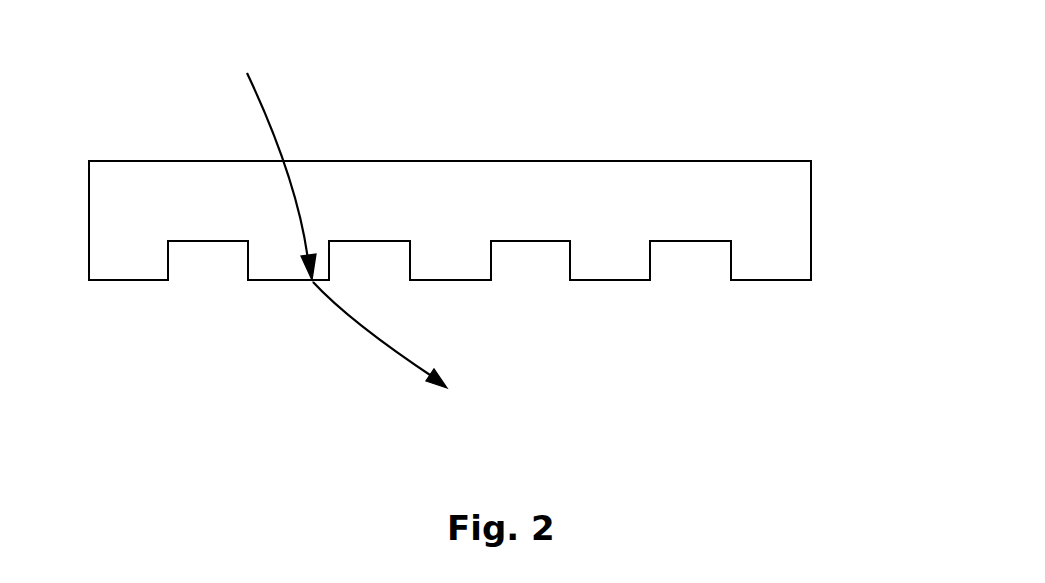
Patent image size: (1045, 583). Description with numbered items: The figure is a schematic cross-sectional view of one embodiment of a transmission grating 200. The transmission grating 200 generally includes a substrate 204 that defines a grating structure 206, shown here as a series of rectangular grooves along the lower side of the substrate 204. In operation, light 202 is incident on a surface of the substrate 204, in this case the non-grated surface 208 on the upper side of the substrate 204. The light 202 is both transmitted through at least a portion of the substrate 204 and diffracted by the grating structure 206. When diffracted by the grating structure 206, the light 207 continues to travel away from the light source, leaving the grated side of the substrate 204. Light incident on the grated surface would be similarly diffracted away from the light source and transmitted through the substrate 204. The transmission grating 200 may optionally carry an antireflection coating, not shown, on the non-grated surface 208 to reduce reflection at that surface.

The transmission grating 200 is at (489, 133).
The light 202 is at (265, 110).
The substrate 204 is at (812, 190).
The grating structure 206 is at (708, 240).
The light 207 is at (362, 322).
The non-grated surface 208 is at (571, 160).